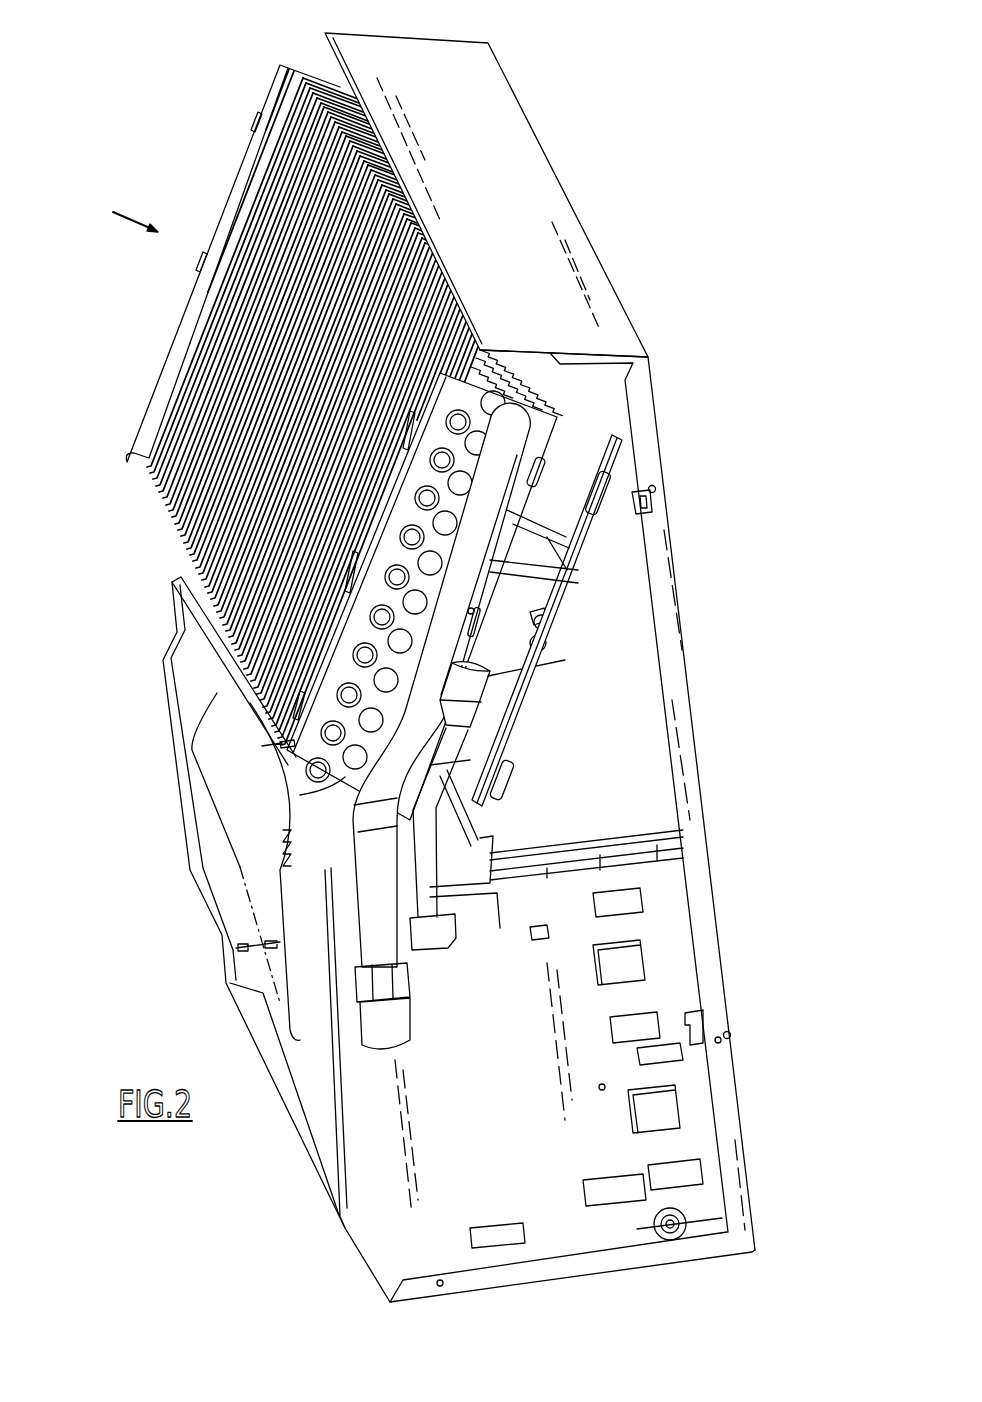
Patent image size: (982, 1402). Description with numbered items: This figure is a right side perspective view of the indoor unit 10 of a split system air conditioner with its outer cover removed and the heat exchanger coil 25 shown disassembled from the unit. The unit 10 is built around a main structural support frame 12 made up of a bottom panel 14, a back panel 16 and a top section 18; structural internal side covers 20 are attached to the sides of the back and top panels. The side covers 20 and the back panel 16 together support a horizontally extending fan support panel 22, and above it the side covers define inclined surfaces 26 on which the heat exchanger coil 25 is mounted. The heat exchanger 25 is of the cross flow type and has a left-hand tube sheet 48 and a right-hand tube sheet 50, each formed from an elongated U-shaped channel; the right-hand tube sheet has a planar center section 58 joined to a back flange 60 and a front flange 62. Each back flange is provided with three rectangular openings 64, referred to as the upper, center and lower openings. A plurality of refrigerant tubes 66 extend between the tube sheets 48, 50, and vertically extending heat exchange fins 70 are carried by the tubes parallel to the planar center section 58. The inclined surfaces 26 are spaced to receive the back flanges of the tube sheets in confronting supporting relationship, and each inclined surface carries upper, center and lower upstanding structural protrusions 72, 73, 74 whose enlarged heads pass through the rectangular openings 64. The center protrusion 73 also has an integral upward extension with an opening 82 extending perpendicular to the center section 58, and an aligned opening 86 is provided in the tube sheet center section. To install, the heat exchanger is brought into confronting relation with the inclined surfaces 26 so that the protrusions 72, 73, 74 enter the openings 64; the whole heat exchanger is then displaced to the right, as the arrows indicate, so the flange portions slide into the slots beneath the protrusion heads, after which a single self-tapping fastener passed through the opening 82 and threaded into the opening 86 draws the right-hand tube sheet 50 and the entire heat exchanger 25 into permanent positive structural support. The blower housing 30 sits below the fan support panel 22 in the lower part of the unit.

The indoor unit 10 is at (417, 679).
The main structural support frame 12 is at (450, 679).
The bottom panel 14 is at (573, 1282).
The back panel 16 is at (672, 553).
The top section 18 is at (462, 179).
The structural internal side covers 20 is at (648, 700).
The fan support panel 22 is at (208, 590).
The heat exchanger coil 25 is at (103, 292).
The inclined surfaces 26 is at (577, 572).
The blower housing 30 is at (210, 662).
The left-hand tube sheet 48 is at (238, 148).
The right-hand tube sheet 50 is at (570, 406).
The planar center section 58 is at (497, 350).
The back flange 60 is at (548, 446).
The front flange 62 is at (290, 747).
The rectangular openings 64 is at (545, 470).
The refrigerant tubes 66 is at (300, 795).
The heat exchange fins 70 is at (165, 506).
The upper protrusion 72 is at (625, 502).
The center protrusion 73 is at (570, 638).
The lower protrusion 74 is at (510, 789).
The opening 82 is at (548, 625).
The opening 86 is at (471, 608).